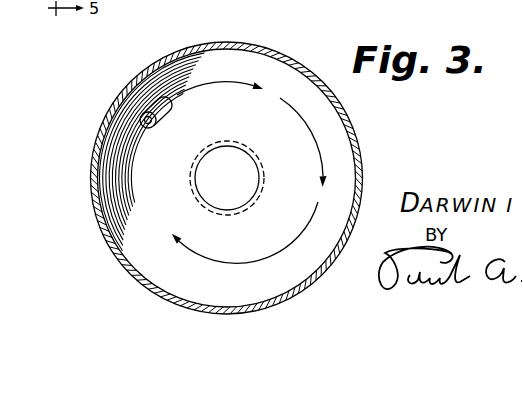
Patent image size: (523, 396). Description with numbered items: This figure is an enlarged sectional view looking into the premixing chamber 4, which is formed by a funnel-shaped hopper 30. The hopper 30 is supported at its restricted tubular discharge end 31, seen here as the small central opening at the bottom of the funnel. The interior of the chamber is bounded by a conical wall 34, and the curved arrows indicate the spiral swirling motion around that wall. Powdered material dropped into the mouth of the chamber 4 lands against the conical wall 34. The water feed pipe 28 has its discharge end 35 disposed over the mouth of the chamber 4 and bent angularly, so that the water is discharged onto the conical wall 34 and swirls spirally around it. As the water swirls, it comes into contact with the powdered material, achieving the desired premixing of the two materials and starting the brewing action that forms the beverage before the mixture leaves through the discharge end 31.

The premixing chamber 4 is at (86, 157).
The water feed pipe 28 is at (149, 128).
The funnel-shaped hopper 30 is at (366, 176).
The restricted tubular discharge end 31 is at (243, 160).
The conical wall 34 is at (331, 129).
The discharge end 35 is at (166, 112).